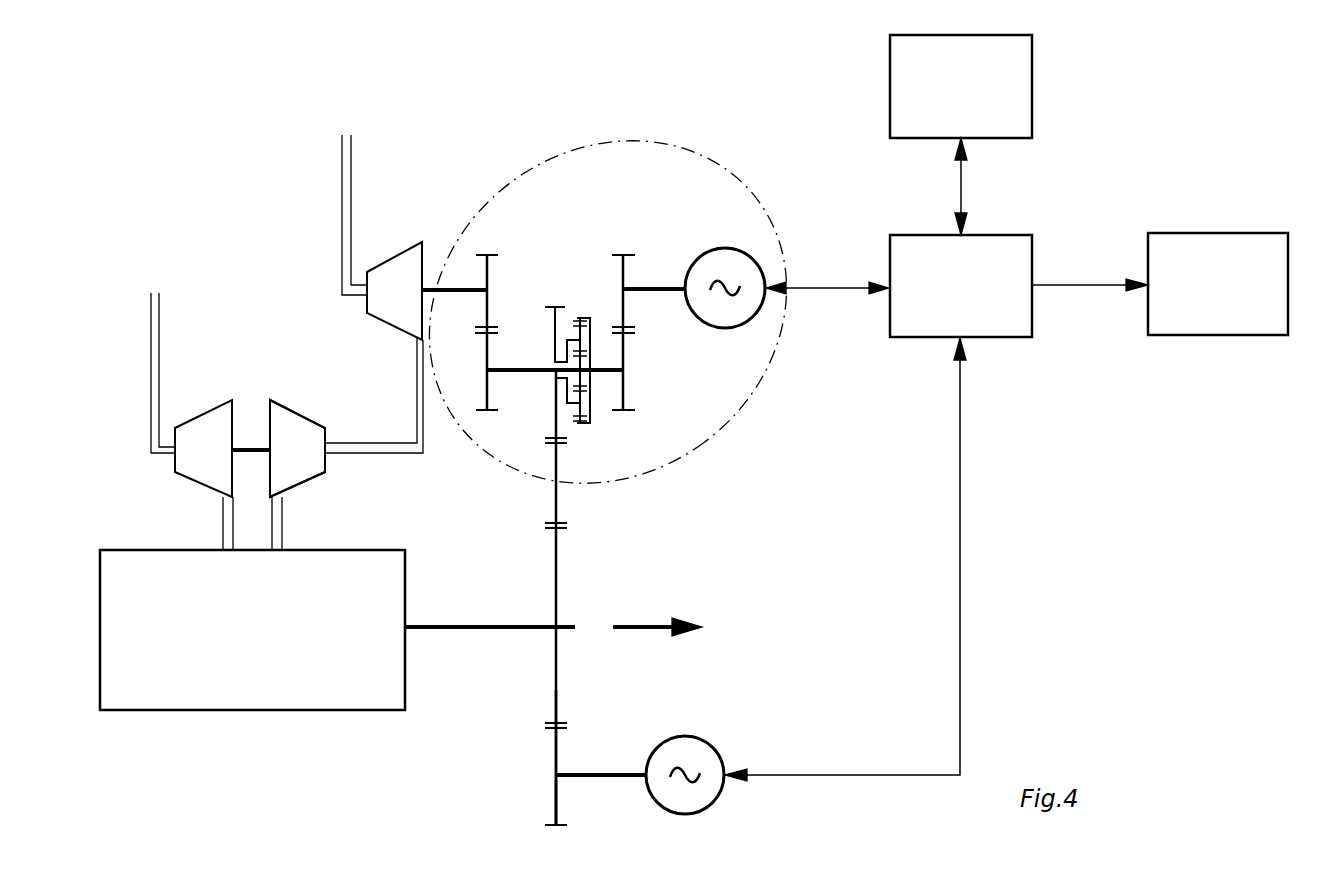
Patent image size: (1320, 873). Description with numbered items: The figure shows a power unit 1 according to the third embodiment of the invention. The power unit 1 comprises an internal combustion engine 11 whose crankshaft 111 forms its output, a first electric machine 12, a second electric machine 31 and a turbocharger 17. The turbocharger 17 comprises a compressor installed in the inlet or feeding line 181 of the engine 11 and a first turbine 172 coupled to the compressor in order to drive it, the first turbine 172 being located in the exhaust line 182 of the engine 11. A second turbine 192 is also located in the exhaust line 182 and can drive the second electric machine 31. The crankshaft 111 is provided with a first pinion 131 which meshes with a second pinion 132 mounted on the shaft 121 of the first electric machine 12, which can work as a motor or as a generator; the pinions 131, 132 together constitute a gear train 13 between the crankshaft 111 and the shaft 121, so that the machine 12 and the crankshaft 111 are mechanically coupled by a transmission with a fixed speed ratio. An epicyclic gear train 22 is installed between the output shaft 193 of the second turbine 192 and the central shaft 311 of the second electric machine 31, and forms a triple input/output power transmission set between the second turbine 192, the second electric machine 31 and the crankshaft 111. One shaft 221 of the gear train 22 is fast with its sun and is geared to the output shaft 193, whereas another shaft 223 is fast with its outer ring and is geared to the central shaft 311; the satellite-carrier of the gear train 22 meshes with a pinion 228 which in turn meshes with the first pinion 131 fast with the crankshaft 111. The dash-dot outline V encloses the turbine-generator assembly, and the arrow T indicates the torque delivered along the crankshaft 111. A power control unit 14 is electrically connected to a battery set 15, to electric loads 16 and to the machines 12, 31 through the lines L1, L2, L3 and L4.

The power unit 1 is at (226, 272).
The internal combustion engine 11 is at (252, 630).
The crankshaft 111 is at (493, 623).
The first electric machine 12 is at (680, 750).
The shaft 121 is at (615, 778).
The gear train 13 is at (450, 735).
The first pinion 131 is at (555, 692).
The second pinion 132 is at (555, 803).
The power control unit 14 is at (961, 286).
The battery set 15 is at (961, 86).
The electric loads 16 is at (1218, 284).
The turbocharger 17 is at (180, 385).
The first turbine 172 is at (302, 467).
The feeding line 181 is at (151, 344).
The exhaust line 182 is at (417, 407).
The second turbine 192 is at (402, 270).
The output shaft 193 is at (455, 262).
The epicyclic gear train 22 is at (546, 280).
The shaft 221 is at (517, 375).
The shaft 223 is at (604, 375).
The pinion 228 is at (557, 498).
The second electric machine 31 is at (740, 320).
The central shaft 311 is at (648, 280).
The turbo-generator assembly V is at (740, 132).
The torque output T is at (657, 610).
The line L1 is at (823, 286).
The line L2 is at (960, 182).
The line L3 is at (1083, 285).
The line L4 is at (960, 520).